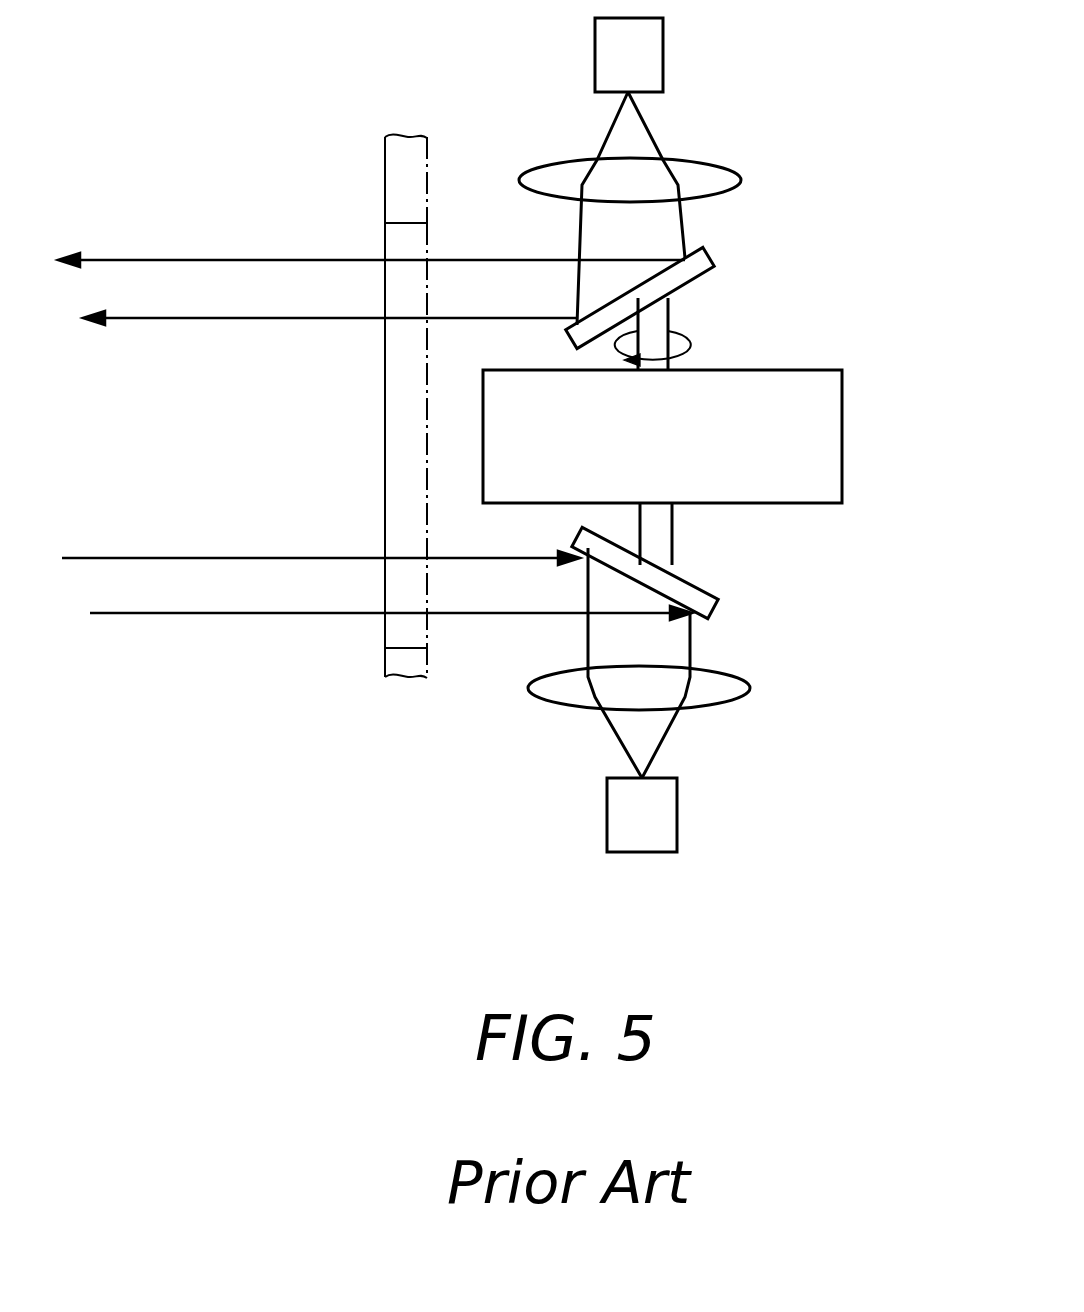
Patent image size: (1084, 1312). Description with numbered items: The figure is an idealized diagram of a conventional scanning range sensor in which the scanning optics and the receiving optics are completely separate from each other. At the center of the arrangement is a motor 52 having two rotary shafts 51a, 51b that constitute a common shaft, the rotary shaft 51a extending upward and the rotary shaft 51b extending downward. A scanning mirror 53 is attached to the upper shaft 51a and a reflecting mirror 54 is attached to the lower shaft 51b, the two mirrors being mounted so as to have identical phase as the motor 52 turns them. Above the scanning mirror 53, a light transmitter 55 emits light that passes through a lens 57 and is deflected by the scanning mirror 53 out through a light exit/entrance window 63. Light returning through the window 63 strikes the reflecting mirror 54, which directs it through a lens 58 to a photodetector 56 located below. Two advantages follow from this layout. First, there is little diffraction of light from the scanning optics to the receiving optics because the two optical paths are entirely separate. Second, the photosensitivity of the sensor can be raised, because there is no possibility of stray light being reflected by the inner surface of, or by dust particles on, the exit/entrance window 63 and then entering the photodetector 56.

The light transmitter 55 is at (663, 52).
The lens 57 is at (740, 168).
The scanning mirror 53 is at (710, 252).
The rotary shaft 51a is at (670, 318).
The motor 52 is at (842, 438).
The rotary shaft 51b is at (672, 540).
The reflecting mirror 54 is at (722, 612).
The lens 58 is at (750, 684).
The photodetector 56 is at (677, 810).
The light exit/entrance window 63 is at (385, 633).